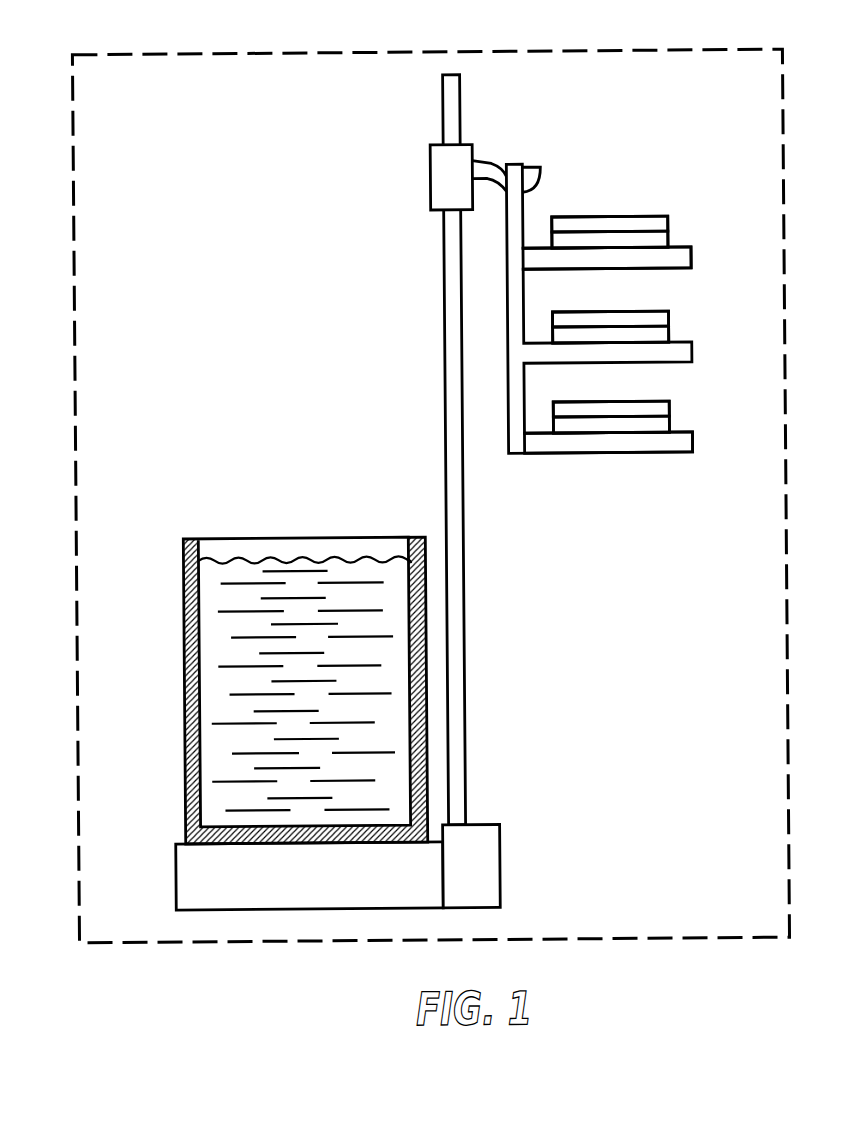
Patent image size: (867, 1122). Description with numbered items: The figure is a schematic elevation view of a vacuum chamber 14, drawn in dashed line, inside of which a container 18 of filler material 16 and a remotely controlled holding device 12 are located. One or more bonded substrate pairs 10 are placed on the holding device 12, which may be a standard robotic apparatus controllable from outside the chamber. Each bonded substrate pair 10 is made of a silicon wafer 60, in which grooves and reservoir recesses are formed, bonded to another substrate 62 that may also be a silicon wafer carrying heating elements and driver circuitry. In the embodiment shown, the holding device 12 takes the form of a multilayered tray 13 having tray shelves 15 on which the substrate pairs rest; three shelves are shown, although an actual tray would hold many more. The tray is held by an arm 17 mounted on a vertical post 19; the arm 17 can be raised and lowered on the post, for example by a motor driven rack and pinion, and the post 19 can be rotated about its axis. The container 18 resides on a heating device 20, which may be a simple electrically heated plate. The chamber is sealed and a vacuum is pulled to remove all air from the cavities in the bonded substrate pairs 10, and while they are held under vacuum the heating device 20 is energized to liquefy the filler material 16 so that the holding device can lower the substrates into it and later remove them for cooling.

The bonded substrate pair 10 is at (676, 212).
The remotely controlled holding device 12 is at (552, 145).
The multilayered tray 13 is at (500, 311).
The vacuum chamber 14 is at (537, 52).
The tray shelves 15 is at (597, 272).
The filler material 16 is at (300, 610).
The arm 17 is at (486, 162).
The container 18 is at (183, 569).
The vertical post 19 is at (464, 677).
The heating device 20 is at (197, 875).
The silicon wafer 60 is at (626, 217).
The other substrate 62 is at (670, 243).